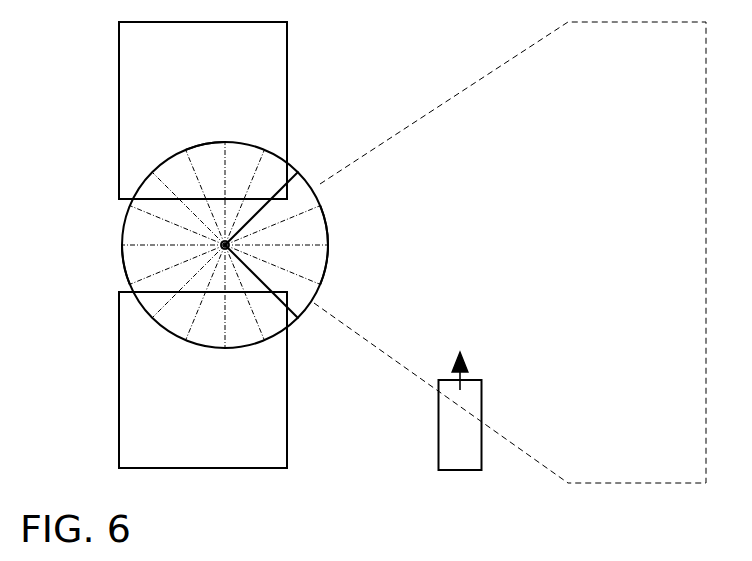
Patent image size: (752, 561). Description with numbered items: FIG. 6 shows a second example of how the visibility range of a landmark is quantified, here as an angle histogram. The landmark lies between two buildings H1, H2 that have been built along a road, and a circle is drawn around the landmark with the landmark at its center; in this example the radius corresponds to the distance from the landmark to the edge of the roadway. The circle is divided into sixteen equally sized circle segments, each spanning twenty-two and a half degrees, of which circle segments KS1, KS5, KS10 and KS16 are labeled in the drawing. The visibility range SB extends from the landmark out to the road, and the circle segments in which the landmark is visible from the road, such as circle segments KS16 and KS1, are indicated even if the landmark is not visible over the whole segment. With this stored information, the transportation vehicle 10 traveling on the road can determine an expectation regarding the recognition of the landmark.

The building H2 is at (119, 102).
The building H1 is at (119, 389).
The circle segment KS5 is at (203, 142).
The circle segment KS1 is at (327, 222).
The circle segment KS16 is at (326, 261).
The circle segment KS10 is at (127, 275).
The visibility range SB is at (366, 338).
The transportation vehicle 10 is at (440, 428).